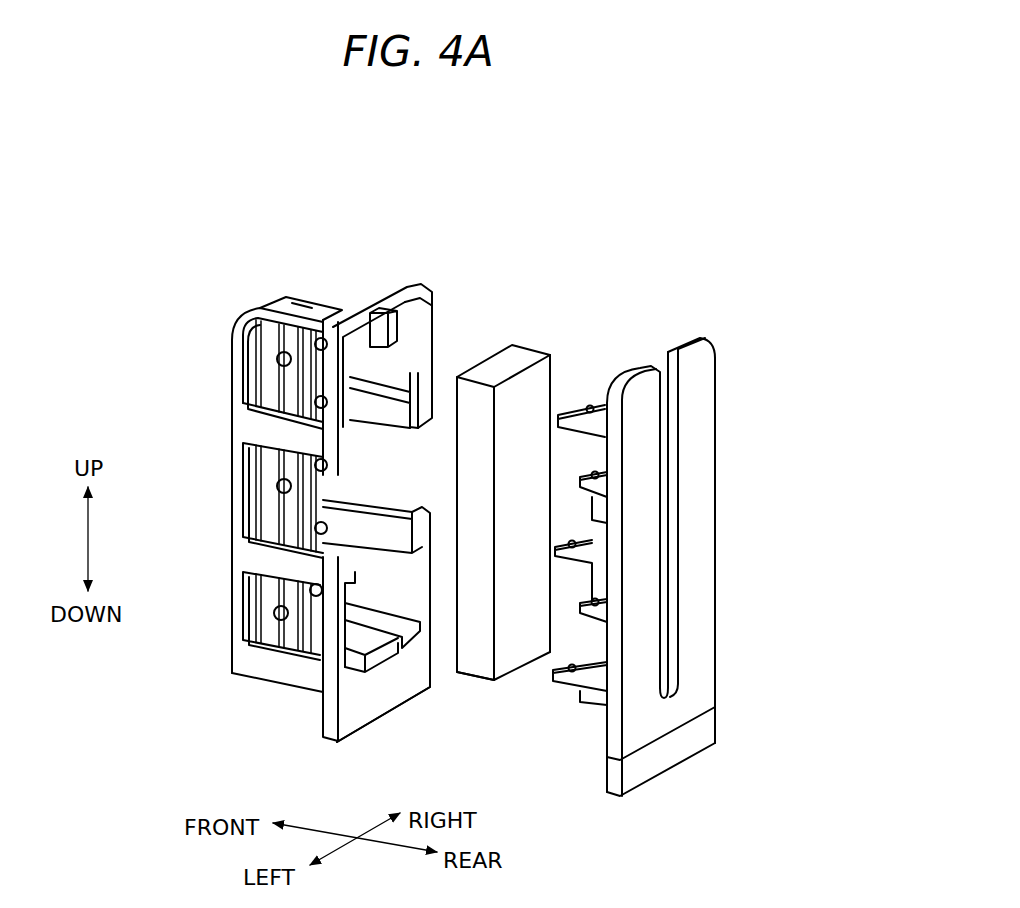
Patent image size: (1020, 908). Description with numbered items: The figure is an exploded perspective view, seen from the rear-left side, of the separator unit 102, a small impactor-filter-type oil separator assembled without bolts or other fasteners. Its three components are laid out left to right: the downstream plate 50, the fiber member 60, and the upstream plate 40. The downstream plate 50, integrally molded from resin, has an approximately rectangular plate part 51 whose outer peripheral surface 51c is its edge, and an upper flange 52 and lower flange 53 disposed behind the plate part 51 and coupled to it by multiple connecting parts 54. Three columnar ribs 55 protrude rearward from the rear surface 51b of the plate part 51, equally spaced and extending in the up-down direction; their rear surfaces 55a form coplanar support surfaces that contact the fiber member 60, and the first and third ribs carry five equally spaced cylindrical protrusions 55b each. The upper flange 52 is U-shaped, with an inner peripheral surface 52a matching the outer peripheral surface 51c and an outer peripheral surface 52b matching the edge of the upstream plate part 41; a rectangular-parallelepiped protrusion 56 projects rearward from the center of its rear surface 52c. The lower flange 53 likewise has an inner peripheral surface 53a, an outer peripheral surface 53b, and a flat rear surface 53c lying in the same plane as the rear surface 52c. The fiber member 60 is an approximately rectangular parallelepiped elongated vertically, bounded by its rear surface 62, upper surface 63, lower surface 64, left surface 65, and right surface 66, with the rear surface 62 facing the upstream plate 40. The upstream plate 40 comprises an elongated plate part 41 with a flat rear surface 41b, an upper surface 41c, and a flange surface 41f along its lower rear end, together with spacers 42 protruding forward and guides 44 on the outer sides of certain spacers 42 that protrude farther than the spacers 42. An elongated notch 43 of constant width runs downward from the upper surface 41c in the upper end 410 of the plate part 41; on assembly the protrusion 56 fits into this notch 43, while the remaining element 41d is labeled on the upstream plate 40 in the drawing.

The separator unit 102 is at (547, 275).
The downstream plate 50 is at (360, 300).
The plate part 51 is at (240, 353).
The rear surface 51b is at (250, 619).
The outer peripheral surface 51c is at (242, 377).
The upper flange 52 is at (432, 293).
The inner peripheral surface 52a is at (410, 362).
The outer peripheral surface 52b is at (407, 286).
The rear surface 52c is at (417, 307).
The lower flange 53 is at (347, 740).
The inner peripheral surface 53a is at (413, 597).
The outer peripheral surface 53b is at (320, 682).
The rear surface 53c is at (353, 708).
The connecting parts 54 is at (337, 312).
The ribs 55 is at (290, 402).
The rear surfaces 55a is at (288, 328).
The protrusions 55b is at (288, 490).
The protrusion 56 is at (398, 327).
The fiber member 60 is at (527, 345).
The rear surface 62 is at (512, 650).
The upper surface 63 is at (510, 363).
The lower surface 64 is at (480, 680).
The left surface 65 is at (462, 492).
The right surface 66 is at (553, 387).
The upstream plate 40 is at (697, 340).
The plate part 41 is at (640, 767).
The rear surface 41b is at (673, 707).
The upper surface 41c is at (687, 343).
The left prong 41d is at (638, 370).
The flange surface 41f is at (668, 748).
The upper end 410 is at (708, 363).
The spacers 42 is at (603, 407).
The notch 43 is at (657, 605).
The guides 44 is at (567, 547).